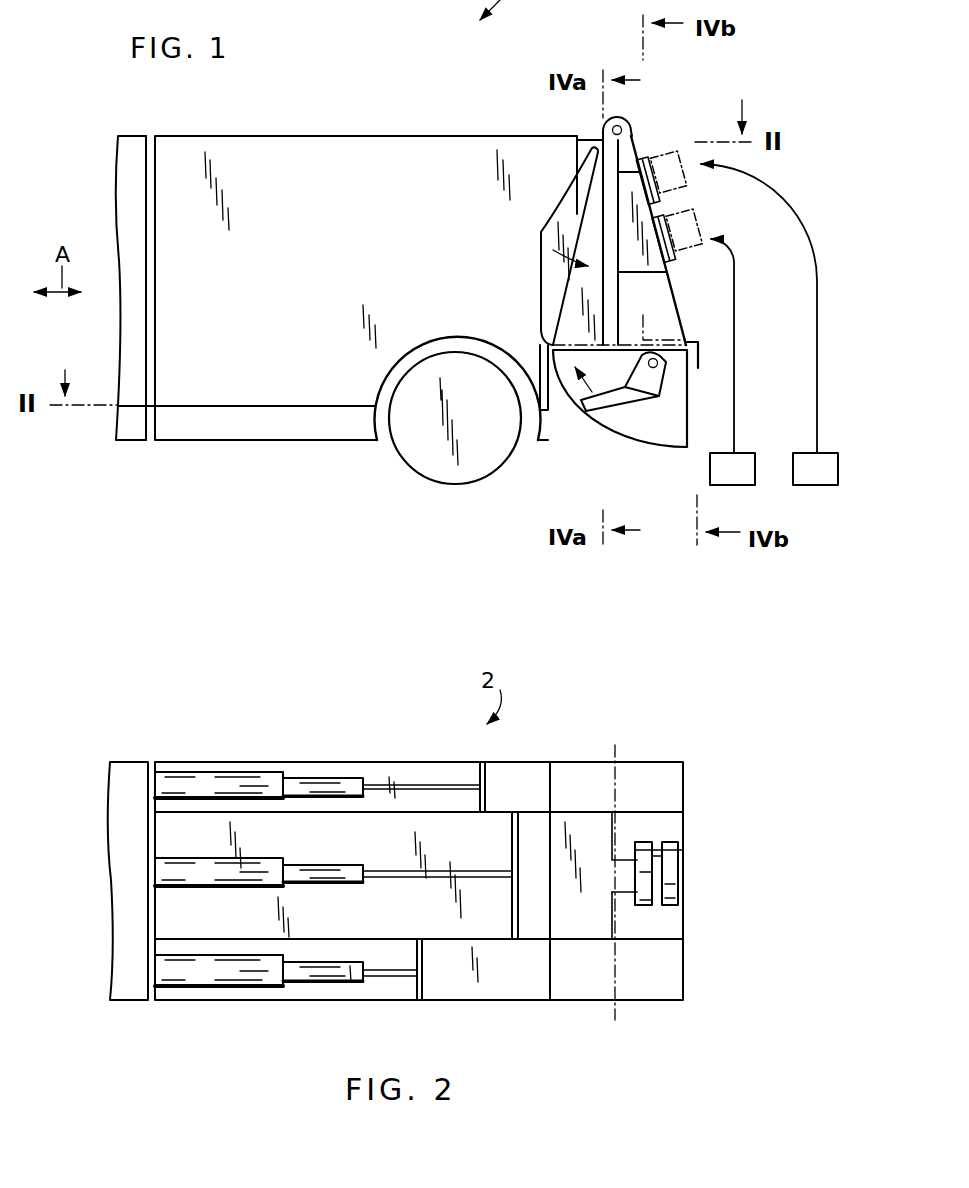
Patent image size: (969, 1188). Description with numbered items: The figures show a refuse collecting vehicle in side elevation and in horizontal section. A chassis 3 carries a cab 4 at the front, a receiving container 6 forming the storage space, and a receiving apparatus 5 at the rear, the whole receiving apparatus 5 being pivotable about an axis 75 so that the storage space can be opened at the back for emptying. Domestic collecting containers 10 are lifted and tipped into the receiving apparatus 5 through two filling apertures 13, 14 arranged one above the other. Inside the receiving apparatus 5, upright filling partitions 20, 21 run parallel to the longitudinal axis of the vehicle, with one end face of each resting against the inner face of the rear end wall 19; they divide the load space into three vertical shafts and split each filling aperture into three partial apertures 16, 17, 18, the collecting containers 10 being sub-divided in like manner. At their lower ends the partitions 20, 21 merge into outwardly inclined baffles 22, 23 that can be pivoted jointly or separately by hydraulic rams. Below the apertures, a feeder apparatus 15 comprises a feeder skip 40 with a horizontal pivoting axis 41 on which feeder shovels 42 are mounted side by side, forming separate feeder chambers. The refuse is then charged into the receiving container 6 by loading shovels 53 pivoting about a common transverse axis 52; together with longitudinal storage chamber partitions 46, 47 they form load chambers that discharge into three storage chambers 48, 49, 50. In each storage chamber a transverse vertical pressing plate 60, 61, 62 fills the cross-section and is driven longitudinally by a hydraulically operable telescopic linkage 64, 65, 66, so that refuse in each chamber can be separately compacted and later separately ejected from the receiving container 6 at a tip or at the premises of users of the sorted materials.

In FIG. 1, the chassis 3 is at (176, 430).
In FIG. 1, the cab 4 is at (128, 400).
In FIG. 2, the cab 4 is at (128, 770).
In FIG. 1, the receiving apparatus 5 is at (815, 205).
In FIG. 1, the receiving container 6 is at (313, 97).
In FIG. 2, the receiving container 6 is at (223, 740).
In FIG. 1, the collecting container 10 is at (683, 160).
In FIG. 1, the filling aperture 13 is at (660, 201).
In FIG. 2, the filling aperture 13 is at (630, 920).
In FIG. 1, the filling aperture 14 is at (673, 258).
In FIG. 2, the filling aperture 14 is at (680, 856).
In FIG. 1, the feeder apparatus 15 is at (722, 420).
In FIG. 2, the partial aperture 16 is at (678, 845).
In FIG. 2, the partial aperture 17 is at (684, 867).
In FIG. 2, the partial aperture 18 is at (699, 920).
In FIG. 1, the rear end wall 19 is at (670, 297).
In FIG. 2, the filling partition 20 is at (618, 866).
In FIG. 2, the filling partition 21 is at (588, 915).
In FIG. 2, the baffle 22 is at (633, 824).
In FIG. 2, the baffle 23 is at (620, 938).
In FIG. 1, the feeder skip 40 is at (684, 432).
In FIG. 1, the horizontal pivoting axis 41 is at (665, 361).
In FIG. 1, the feeder shovel 42 is at (573, 447).
In FIG. 2, the storage chamber partition 46 is at (375, 790).
In FIG. 2, the storage chamber partition 47 is at (392, 950).
In FIG. 2, the storage chamber 48 is at (405, 770).
In FIG. 2, the storage chamber 49 is at (490, 859).
In FIG. 1, the storage chamber 50 is at (288, 395).
In FIG. 2, the storage chamber 50 is at (497, 995).
In FIG. 1, the common pivoting axis 52 is at (591, 150).
In FIG. 1, the loading shovel 53 is at (488, 267).
In FIG. 2, the pressing plate 60 is at (485, 775).
In FIG. 2, the pressing plate 61 is at (520, 835).
In FIG. 2, the pressing plate 62 is at (425, 995).
In FIG. 2, the telescopic linkage 64 is at (300, 782).
In FIG. 2, the telescopic linkage 65 is at (322, 873).
In FIG. 2, the telescopic linkage 66 is at (305, 975).
In FIG. 1, the pivot axis 75 is at (623, 121).